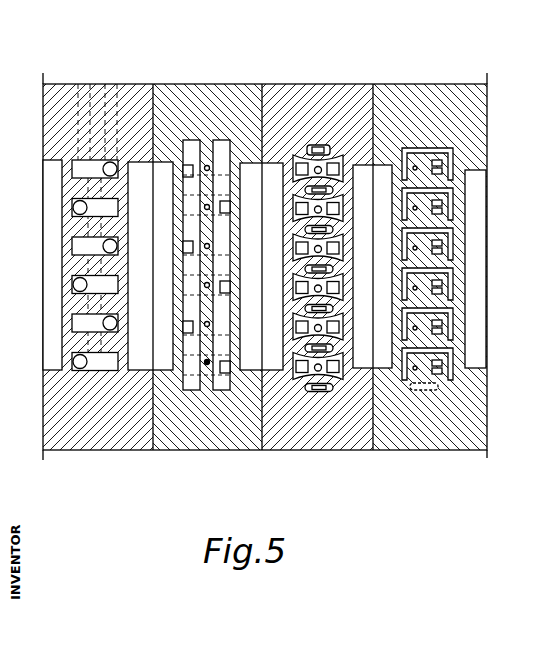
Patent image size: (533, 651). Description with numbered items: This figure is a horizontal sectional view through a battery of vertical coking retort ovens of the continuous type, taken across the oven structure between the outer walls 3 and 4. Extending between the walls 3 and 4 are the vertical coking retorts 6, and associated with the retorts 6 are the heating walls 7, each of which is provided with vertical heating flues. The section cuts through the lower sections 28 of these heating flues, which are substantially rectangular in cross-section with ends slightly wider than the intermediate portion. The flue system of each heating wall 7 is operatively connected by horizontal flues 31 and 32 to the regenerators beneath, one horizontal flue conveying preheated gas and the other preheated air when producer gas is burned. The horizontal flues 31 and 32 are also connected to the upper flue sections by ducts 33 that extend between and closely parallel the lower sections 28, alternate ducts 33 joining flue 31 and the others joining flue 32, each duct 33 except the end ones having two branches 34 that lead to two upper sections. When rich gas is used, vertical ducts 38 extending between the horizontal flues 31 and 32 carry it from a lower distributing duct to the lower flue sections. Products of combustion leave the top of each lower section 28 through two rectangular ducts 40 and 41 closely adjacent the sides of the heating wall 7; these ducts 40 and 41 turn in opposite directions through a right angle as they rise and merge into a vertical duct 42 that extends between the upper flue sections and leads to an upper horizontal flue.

The outer wall 3 is at (131, 96).
The outer wall 4 is at (353, 440).
The vertical coking retort 6 is at (49, 250).
The heating wall 7 is at (62, 306).
The lower section of heating flue 28 is at (343, 158).
The horizontal flue 31 is at (192, 140).
The horizontal flue 32 is at (223, 140).
The duct 33 is at (319, 146).
The branch 34 is at (434, 283).
The vertical duct 38 is at (207, 362).
The rectangular duct 40 is at (396, 158).
The rectangular duct 41 is at (451, 172).
The vertical duct 42 is at (449, 150).